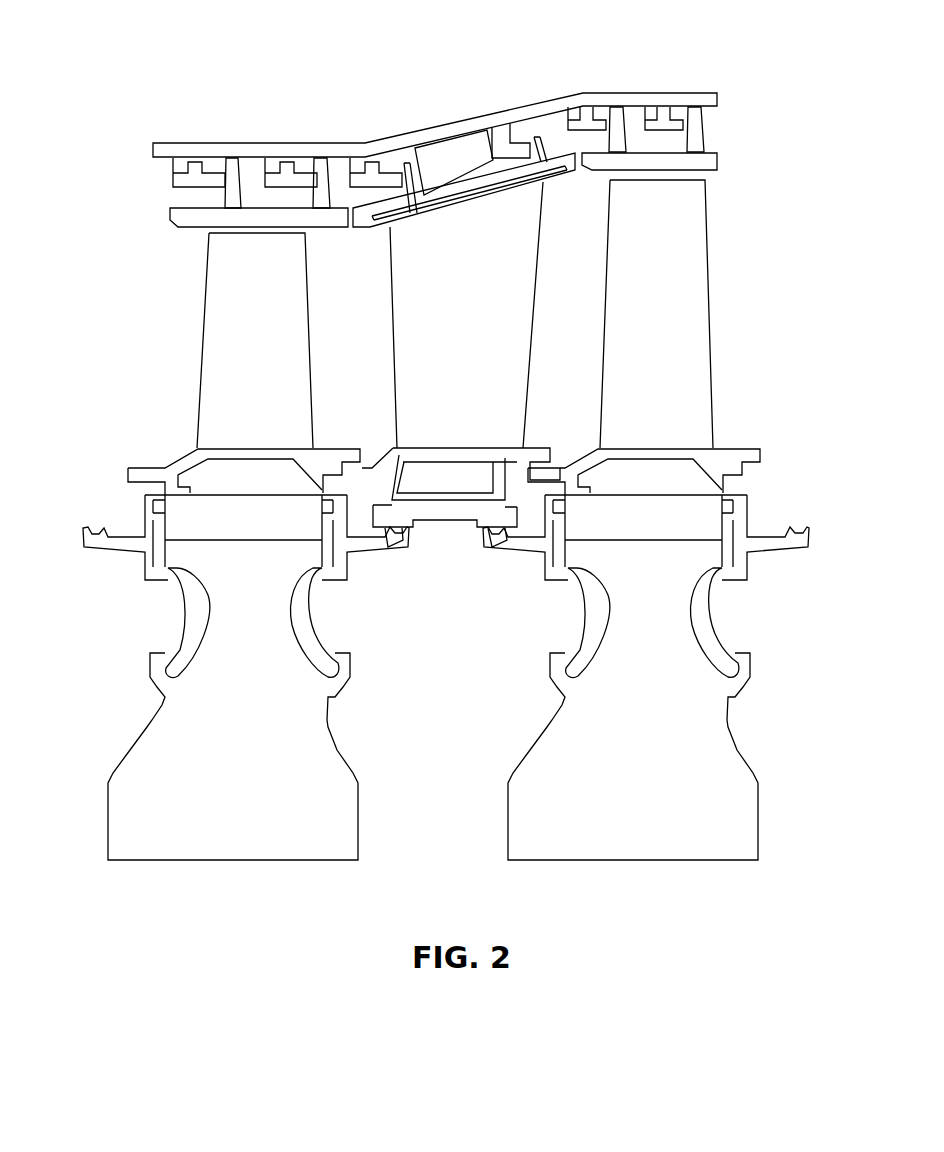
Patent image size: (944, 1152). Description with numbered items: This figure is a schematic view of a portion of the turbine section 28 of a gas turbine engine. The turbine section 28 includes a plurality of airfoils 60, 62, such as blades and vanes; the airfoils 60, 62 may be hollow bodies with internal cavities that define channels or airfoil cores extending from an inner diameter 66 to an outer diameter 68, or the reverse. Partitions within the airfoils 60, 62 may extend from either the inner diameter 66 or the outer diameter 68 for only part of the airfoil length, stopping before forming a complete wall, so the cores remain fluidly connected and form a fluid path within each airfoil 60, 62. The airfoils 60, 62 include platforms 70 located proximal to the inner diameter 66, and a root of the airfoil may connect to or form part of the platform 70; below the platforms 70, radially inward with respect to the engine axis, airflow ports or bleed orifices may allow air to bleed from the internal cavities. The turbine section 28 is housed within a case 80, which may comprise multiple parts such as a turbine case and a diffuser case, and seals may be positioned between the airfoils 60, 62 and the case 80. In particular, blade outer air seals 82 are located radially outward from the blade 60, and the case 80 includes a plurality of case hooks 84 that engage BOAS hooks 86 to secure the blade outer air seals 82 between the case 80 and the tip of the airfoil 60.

The turbine section 28 is at (122, 47).
The airfoil 60 is at (293, 277).
The airfoil 62 is at (513, 260).
The inner diameter 66 is at (391, 442).
The outer diameter 68 is at (437, 148).
The platform 70 is at (532, 453).
The case 80 is at (474, 130).
The blade outer air seal 82 is at (243, 217).
The case hook 84 is at (178, 163).
The BOAS hook 86 is at (231, 172).